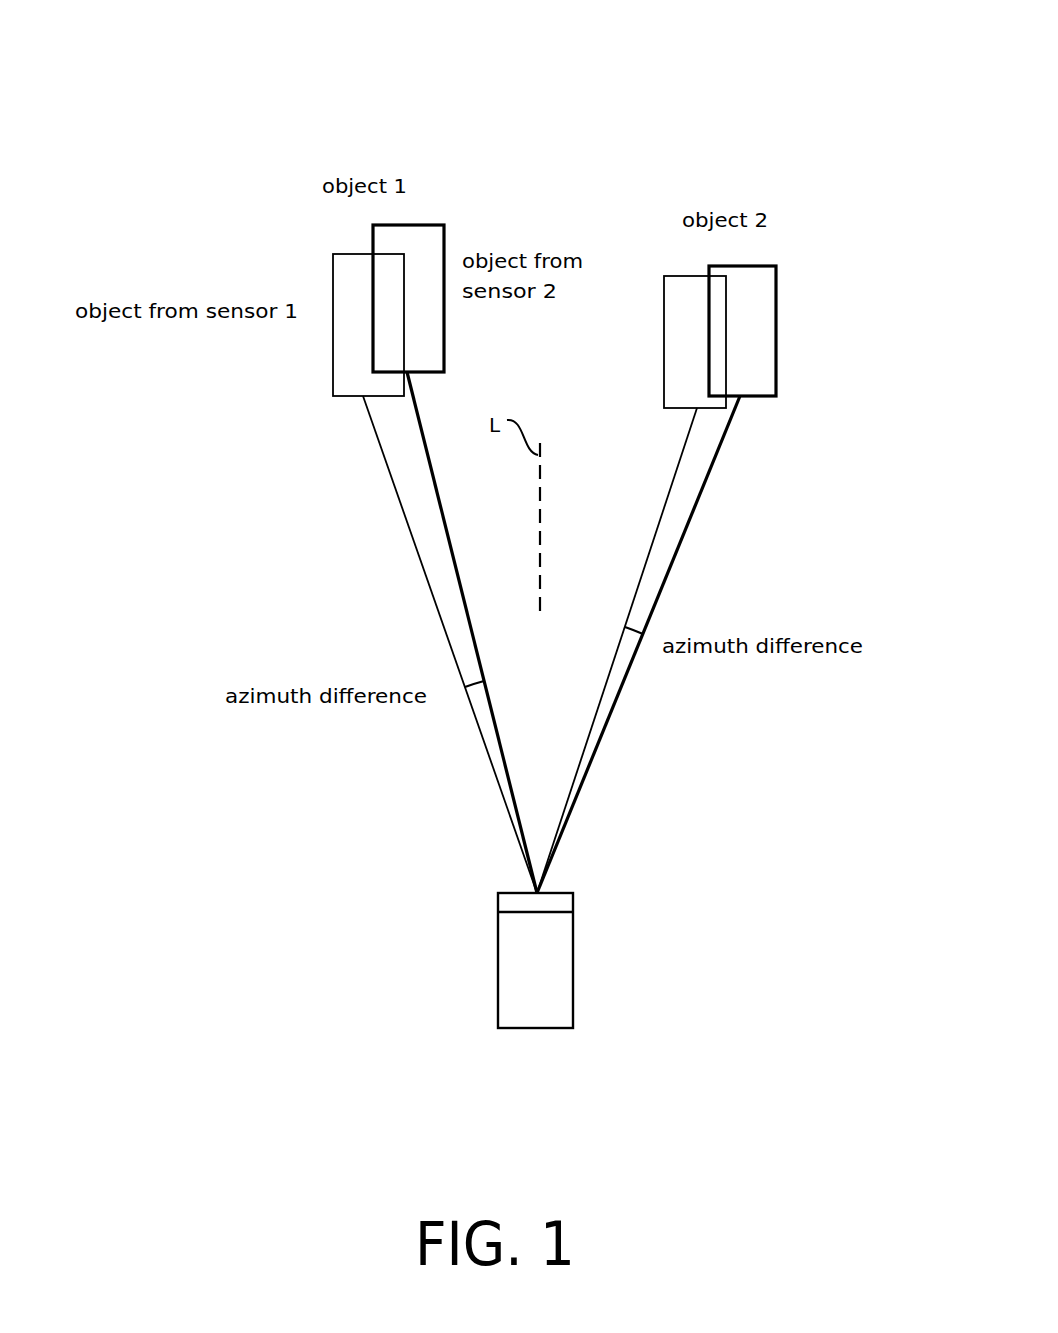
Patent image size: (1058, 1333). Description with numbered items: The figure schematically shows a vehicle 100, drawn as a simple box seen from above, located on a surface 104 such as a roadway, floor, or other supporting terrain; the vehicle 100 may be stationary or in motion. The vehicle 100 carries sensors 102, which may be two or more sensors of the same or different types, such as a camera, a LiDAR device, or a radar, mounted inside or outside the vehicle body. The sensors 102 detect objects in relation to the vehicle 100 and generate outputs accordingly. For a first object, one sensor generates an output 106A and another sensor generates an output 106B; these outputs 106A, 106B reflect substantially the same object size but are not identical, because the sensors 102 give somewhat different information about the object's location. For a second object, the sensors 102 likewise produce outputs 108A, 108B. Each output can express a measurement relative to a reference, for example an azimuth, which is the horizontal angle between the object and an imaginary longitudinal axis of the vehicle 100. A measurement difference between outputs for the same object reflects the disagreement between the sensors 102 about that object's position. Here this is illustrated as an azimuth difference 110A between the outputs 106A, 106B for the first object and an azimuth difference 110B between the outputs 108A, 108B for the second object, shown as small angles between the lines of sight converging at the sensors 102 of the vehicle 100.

The vehicle 100 is at (557, 986).
The sensors 102 is at (553, 901).
The surface 104 is at (760, 36).
The output 106A is at (333, 278).
The output 106B is at (433, 225).
The output 108A is at (664, 343).
The output 108B is at (776, 318).
The azimuth difference 110A is at (500, 663).
The azimuth difference 110B is at (634, 628).